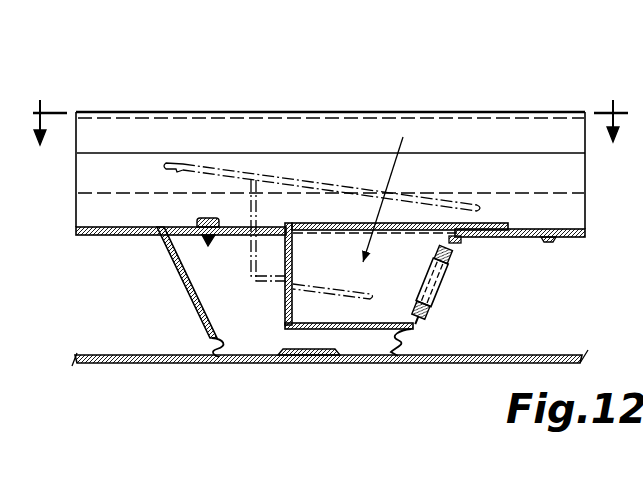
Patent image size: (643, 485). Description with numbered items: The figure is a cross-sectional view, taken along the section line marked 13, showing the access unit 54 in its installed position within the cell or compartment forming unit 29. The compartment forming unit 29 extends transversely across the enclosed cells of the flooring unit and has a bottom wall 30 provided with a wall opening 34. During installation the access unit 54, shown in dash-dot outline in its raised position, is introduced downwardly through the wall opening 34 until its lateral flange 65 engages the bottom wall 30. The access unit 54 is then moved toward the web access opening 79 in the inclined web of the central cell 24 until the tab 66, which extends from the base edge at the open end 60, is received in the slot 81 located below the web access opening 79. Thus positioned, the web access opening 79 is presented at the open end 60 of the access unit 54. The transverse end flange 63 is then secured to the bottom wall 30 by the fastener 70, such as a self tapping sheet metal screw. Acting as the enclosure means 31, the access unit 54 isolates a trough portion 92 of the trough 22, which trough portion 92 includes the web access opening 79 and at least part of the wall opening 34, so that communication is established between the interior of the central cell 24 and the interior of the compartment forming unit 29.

The section line 13- 13 is at (331, 142).
The trough 22 is at (248, 325).
The central cell 24 is at (541, 341).
The cell or compartment forming unit 29 is at (549, 104).
The bottom wall 30 is at (97, 227).
The enclosure means 31 is at (306, 342).
The wall opening 34 is at (519, 228).
The access unit 54 is at (311, 181).
The open end 60 is at (453, 249).
The transverse end flange 63 is at (241, 225).
The lateral flange 65 is at (352, 221).
The tab 66 is at (419, 333).
The fastener 70 is at (212, 218).
The web access opening 79 is at (442, 288).
The slot 81 is at (423, 325).
The trough portion 92 is at (364, 287).